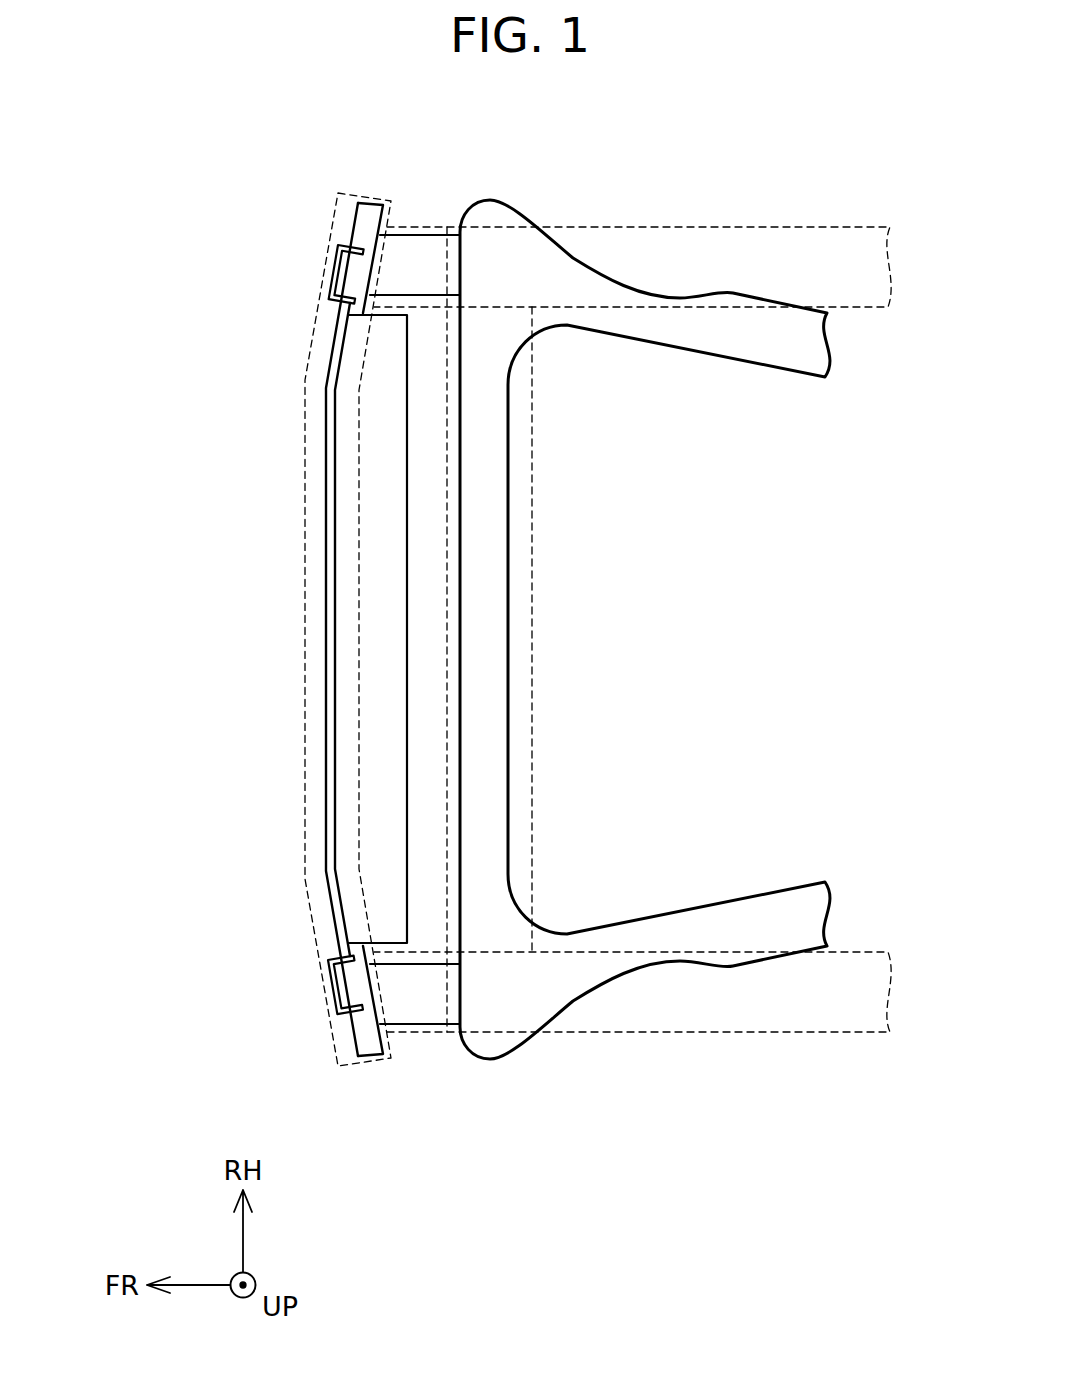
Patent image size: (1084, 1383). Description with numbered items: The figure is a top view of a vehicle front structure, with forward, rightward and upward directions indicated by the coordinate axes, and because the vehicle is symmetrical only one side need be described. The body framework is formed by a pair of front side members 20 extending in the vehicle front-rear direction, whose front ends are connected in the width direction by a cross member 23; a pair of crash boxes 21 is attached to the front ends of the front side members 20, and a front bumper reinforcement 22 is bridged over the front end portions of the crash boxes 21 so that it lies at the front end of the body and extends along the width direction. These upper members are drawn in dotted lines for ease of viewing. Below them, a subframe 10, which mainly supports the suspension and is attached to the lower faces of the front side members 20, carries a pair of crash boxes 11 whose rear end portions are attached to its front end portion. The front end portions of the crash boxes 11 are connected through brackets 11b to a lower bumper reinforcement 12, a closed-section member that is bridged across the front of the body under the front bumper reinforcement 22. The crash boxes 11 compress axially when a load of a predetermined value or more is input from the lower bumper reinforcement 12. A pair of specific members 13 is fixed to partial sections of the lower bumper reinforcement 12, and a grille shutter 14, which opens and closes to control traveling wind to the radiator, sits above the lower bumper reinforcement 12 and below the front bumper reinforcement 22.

The subframe 10 is at (742, 348).
The crash box 11 is at (417, 247).
The bracket 11b is at (383, 226).
The lower bumper reinforcement 12 is at (365, 218).
The specific member 13 is at (337, 268).
The grille shutter 14 is at (375, 425).
The front side member 20 is at (715, 237).
The crash box 21 is at (433, 225).
The front bumper reinforcement 22 is at (300, 597).
The cross member 23 is at (535, 643).